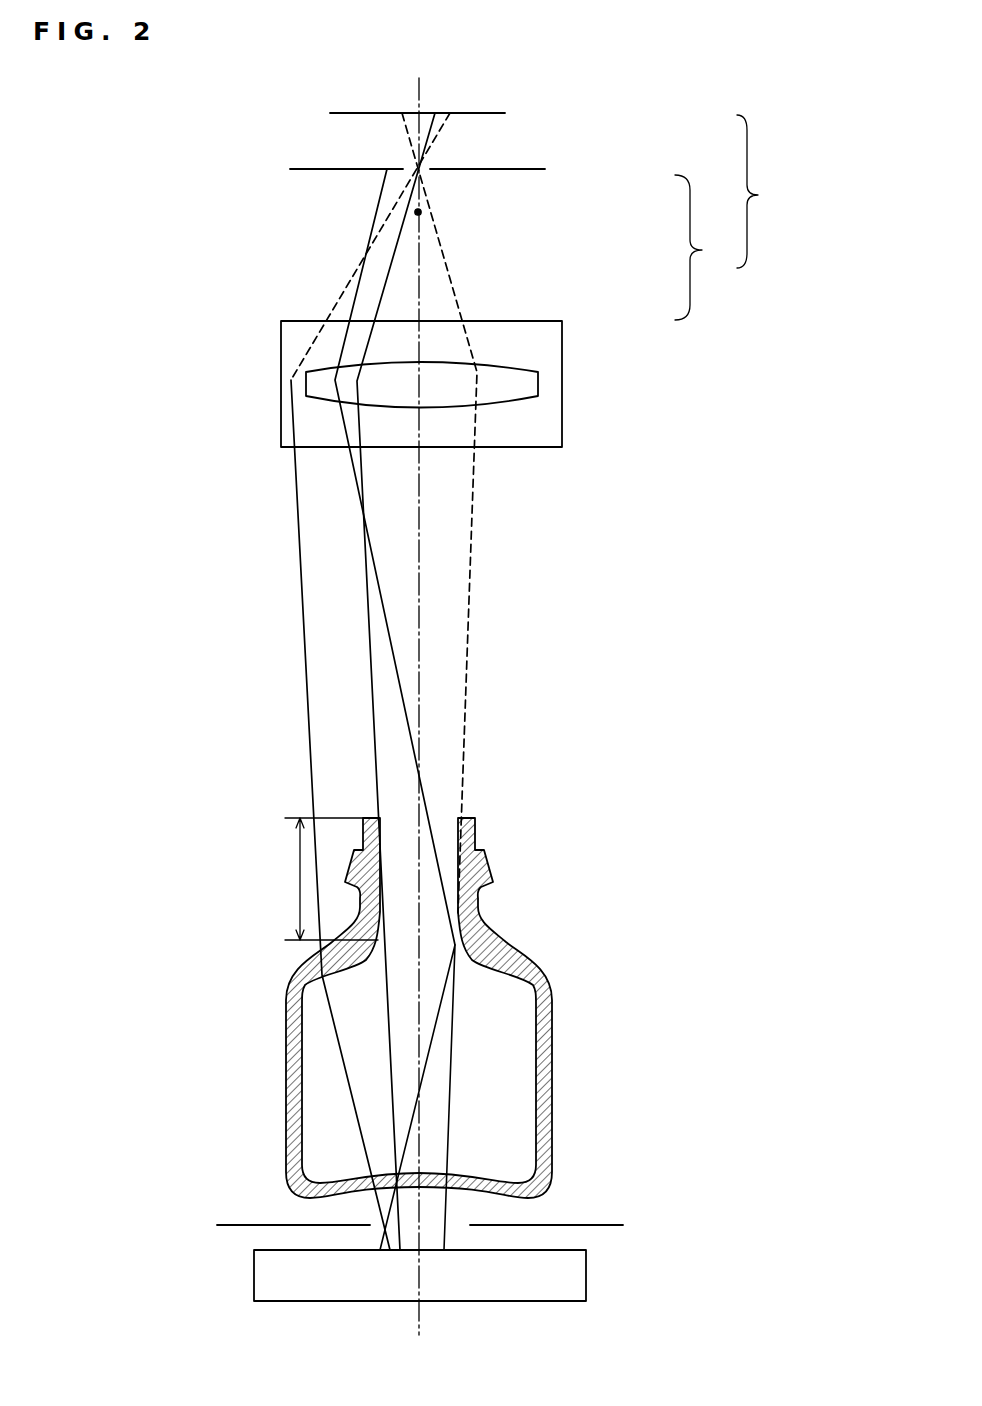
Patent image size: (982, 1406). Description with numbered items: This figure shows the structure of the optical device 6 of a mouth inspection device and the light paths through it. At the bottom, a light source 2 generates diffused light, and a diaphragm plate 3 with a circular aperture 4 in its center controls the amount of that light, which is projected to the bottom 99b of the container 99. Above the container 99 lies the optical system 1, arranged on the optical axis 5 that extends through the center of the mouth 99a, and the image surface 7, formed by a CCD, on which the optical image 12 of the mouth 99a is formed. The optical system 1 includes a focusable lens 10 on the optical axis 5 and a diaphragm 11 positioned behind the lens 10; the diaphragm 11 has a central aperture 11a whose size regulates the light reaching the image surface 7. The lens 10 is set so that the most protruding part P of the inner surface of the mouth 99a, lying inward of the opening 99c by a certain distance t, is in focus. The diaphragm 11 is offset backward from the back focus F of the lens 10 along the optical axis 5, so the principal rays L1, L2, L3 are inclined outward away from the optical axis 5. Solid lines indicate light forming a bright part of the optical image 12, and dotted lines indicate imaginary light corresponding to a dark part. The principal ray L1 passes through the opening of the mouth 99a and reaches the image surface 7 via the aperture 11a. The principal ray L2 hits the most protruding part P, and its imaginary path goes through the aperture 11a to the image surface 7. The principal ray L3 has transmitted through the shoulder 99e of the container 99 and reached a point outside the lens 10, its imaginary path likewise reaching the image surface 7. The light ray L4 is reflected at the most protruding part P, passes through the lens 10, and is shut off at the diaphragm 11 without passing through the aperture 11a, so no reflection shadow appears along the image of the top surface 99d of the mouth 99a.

The optical system 1 is at (703, 247).
The light source 2 is at (270, 1275).
The diaphragm plate 3 is at (247, 1225).
The aperture 4 is at (470, 1223).
The optical axis 5 is at (420, 743).
The optical device 6 is at (759, 191).
The image surface 7 is at (505, 113).
The lens 10 is at (547, 321).
The diaphragm 11 is at (525, 170).
The aperture 11a is at (405, 168).
The optical image 12 is at (465, 121).
The back focus F is at (421, 212).
The principal ray L1 is at (372, 653).
The principal ray L2 is at (475, 538).
The principal ray L3 is at (295, 530).
The light ray L4 is at (353, 475).
The container 99 is at (569, 1033).
The mouth 99a is at (487, 858).
The bottom 99b is at (473, 1177).
The opening 99c is at (438, 817).
The top surface 99d is at (370, 817).
The shoulder 99e is at (307, 968).
The most protruding part P is at (490, 935).
The distance t is at (327, 879).